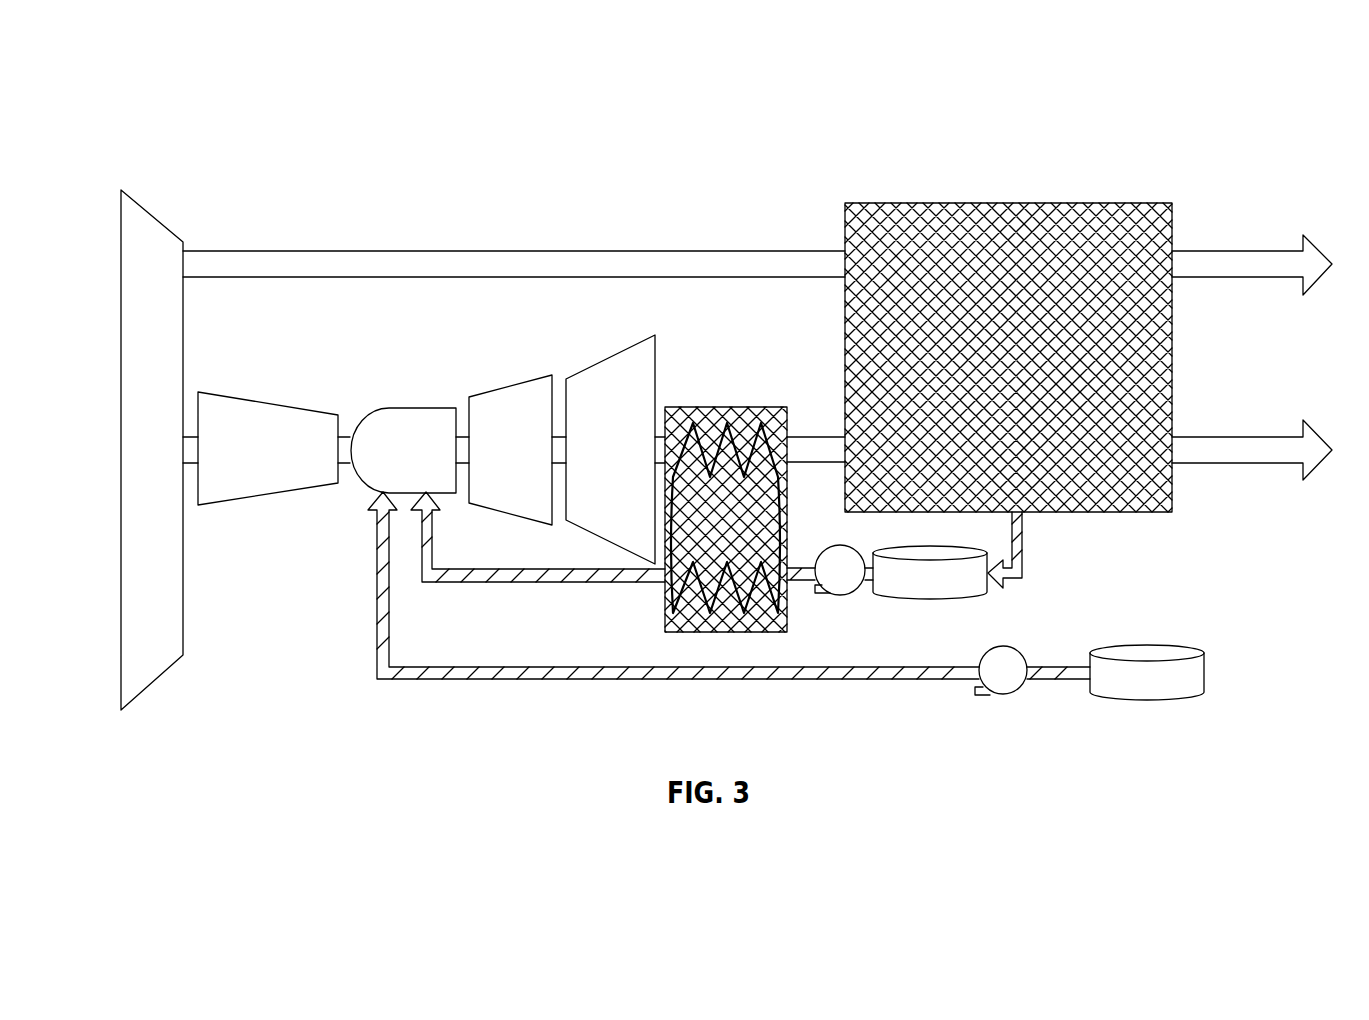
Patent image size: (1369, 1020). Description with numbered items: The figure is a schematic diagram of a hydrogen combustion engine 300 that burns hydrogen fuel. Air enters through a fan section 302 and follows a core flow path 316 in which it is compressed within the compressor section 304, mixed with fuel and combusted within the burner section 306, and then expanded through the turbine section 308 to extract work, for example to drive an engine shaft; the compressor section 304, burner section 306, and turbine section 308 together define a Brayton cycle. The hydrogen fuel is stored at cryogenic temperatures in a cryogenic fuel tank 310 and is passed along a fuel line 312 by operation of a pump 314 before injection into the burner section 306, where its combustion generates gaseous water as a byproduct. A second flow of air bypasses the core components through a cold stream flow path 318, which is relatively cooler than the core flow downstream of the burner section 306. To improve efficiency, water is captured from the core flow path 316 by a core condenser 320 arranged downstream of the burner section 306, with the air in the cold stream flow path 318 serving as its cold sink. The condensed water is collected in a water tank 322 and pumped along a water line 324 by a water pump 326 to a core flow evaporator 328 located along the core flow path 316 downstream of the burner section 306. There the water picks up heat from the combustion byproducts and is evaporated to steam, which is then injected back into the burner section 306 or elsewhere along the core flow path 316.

The hydrogen combustion engine 300 is at (150, 97).
The fan section 302 is at (152, 708).
The compressor section 304 is at (234, 516).
The burner section 306 is at (353, 498).
The turbine section 308 is at (589, 333).
The cryogenic fuel tank 310 is at (1147, 702).
The fuel line 312 is at (785, 680).
The pump 314 is at (1005, 695).
The core flow path 316 is at (800, 436).
The cold stream flow path 318 is at (500, 251).
The core condenser 320 is at (1174, 487).
The water tank 322 is at (913, 600).
The water line 324 is at (470, 583).
The water pump 326 is at (835, 590).
The core flow evaporator 328 is at (735, 407).